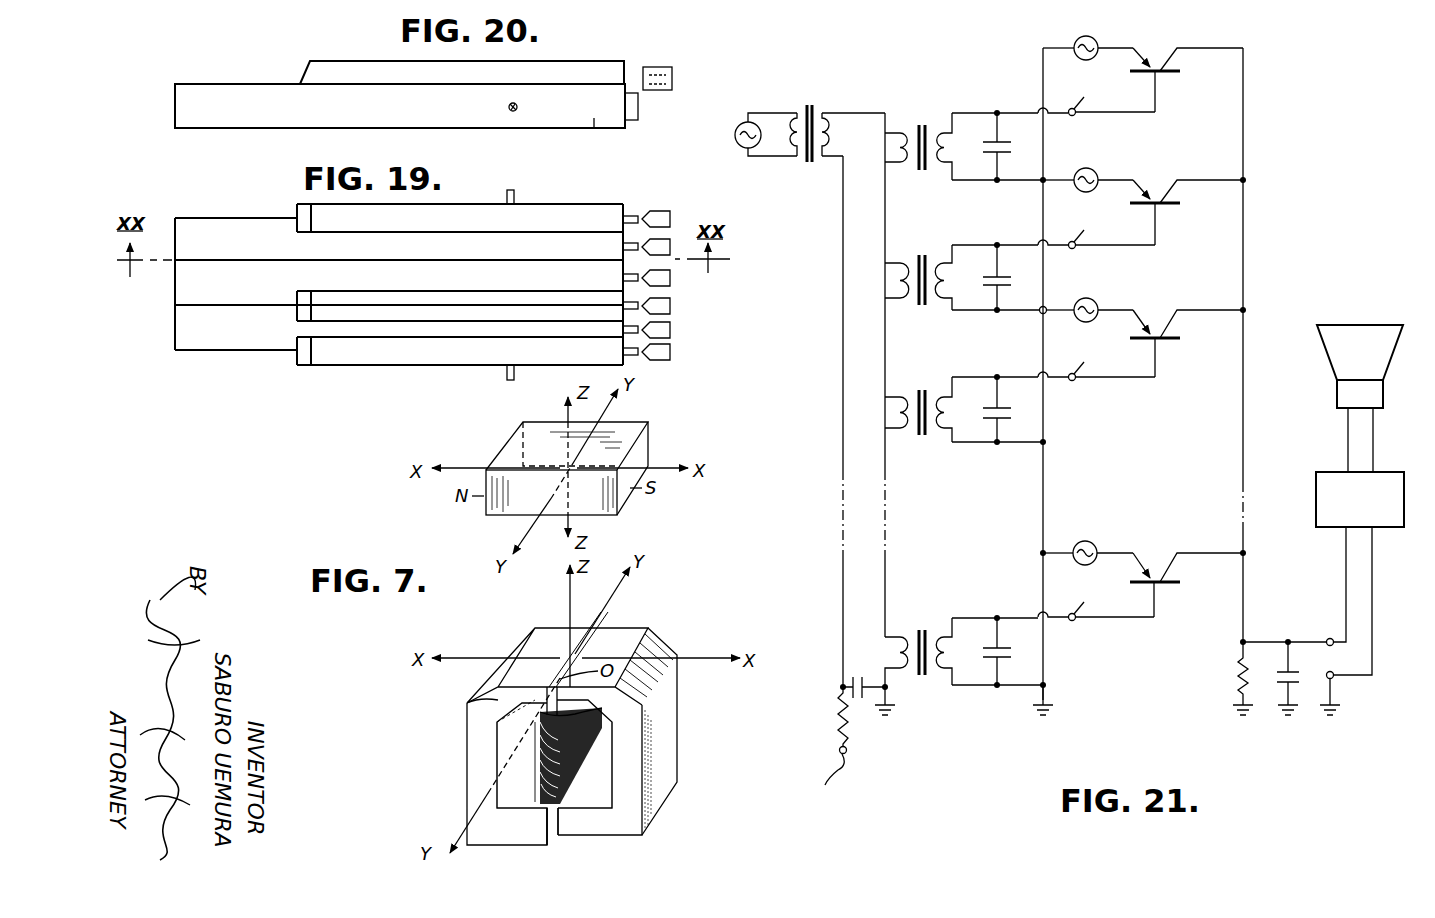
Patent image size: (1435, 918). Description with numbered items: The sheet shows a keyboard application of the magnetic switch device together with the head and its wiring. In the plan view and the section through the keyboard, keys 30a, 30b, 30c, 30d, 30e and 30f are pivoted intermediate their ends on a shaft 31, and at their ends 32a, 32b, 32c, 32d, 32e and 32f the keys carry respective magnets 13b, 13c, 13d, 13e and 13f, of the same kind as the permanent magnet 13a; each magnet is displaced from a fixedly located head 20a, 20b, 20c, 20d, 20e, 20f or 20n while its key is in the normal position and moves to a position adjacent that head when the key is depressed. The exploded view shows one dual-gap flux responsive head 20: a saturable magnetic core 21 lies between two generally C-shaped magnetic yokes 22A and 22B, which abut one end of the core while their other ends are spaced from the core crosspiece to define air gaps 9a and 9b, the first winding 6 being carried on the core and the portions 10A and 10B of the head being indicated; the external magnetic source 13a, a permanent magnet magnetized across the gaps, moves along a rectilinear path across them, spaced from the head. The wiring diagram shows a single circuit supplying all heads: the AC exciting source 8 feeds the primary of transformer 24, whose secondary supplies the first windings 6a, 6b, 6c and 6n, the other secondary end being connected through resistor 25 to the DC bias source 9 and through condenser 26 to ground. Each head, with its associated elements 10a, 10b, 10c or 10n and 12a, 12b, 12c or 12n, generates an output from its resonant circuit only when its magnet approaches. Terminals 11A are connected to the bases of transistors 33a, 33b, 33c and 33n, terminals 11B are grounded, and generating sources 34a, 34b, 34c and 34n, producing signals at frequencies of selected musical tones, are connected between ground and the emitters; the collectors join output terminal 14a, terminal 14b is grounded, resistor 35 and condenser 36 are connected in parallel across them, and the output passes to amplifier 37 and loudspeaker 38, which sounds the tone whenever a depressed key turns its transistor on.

In FIG. 20, the key 30a is at (336, 63).
In FIG. 19, the key 30a is at (320, 233).
In FIG. 20, the key 30b is at (258, 115).
In FIG. 19, the key 30b is at (256, 221).
In FIG. 19, the key 30c is at (190, 298).
In FIG. 19, the key 30d is at (296, 313).
In FIG. 19, the key 30e is at (186, 340).
In FIG. 19, the key 30f is at (296, 360).
In FIG. 20, the shaft 31 is at (517, 107).
In FIG. 19, the shaft 31 is at (506, 196).
In FIG. 19, the key end 32a is at (624, 219).
In FIG. 20, the key end 32b is at (597, 120).
In FIG. 19, the key end 32b is at (623, 250).
In FIG. 19, the key end 32c is at (623, 281).
In FIG. 19, the key end 32d is at (623, 310).
In FIG. 19, the key end 32e is at (622, 330).
In FIG. 19, the key end 32f is at (623, 358).
In FIG. 19, the head 20a is at (662, 210).
In FIG. 21, the head 20a is at (922, 128).
In FIG. 20, the head 20b is at (664, 66).
In FIG. 19, the head 20b is at (672, 252).
In FIG. 21, the head 20b is at (920, 257).
In FIG. 19, the head 20c is at (672, 283).
In FIG. 21, the head 20c is at (922, 402).
In FIG. 19, the head 20d is at (672, 310).
In FIG. 19, the head 20e is at (672, 335).
In FIG. 19, the head 20f is at (672, 360).
In FIG. 21, the head 20n is at (922, 632).
In FIG. 19, the external magnetic source 13a is at (636, 212).
In FIG. 7, the external magnetic source 13a is at (512, 437).
In FIG. 20, the magnet 13b is at (638, 108).
In FIG. 19, the magnet 13b is at (668, 246).
In FIG. 19, the magnet 13c is at (670, 262).
In FIG. 19, the magnet 13d is at (670, 300).
In FIG. 19, the magnet 13e is at (668, 358).
In FIG. 19, the magnet 13f is at (648, 360).
In FIG. 7, the dual-gap magnetic flux responsive head 20 is at (485, 742).
In FIG. 7, the saturable magnetic core 21 is at (470, 706).
In FIG. 7, the magnetic yoke 22A is at (470, 782).
In FIG. 7, the magnetic yoke 22B is at (657, 791).
In FIG. 7, the pole piece 10A is at (540, 756).
In FIG. 7, the pole piece 10B is at (648, 676).
In FIG. 7, the air gap 9a is at (553, 687).
In FIG. 7, the air gap 9b is at (598, 645).
In FIG. 7, the first winding 6 is at (593, 765).
In FIG. 21, the AC exciting source 8 is at (740, 122).
In FIG. 21, the transformer 24 is at (803, 122).
In FIG. 21, the first winding 6a is at (897, 158).
In FIG. 21, the first winding 6b is at (897, 283).
In FIG. 21, the first winding 6c is at (897, 414).
In FIG. 21, the first winding 6n is at (897, 648).
In FIG. 21, the pickup winding 10a is at (950, 155).
In FIG. 21, the pickup winding 10b is at (955, 290).
In FIG. 21, the pickup winding 10c is at (955, 418).
In FIG. 21, the pickup winding 10n is at (950, 655).
In FIG. 21, the capacitor 12a is at (978, 152).
In FIG. 21, the capacitor 12b is at (980, 280).
In FIG. 21, the capacitor 12c is at (1010, 417).
In FIG. 21, the capacitor 12n is at (978, 658).
In FIG. 21, the terminal 11A is at (1096, 347).
In FIG. 21, the terminal 11B is at (1042, 182).
In FIG. 21, the generating source 34a is at (1100, 27).
In FIG. 21, the generating source 34b is at (1100, 162).
In FIG. 21, the generating source 34c is at (1100, 296).
In FIG. 21, the generating source 34n is at (1100, 531).
In FIG. 21, the transistor 33a is at (1182, 74).
In FIG. 21, the transistor 33b is at (1182, 206).
In FIG. 21, the transistor 33c is at (1182, 341).
In FIG. 21, the transistor 33n is at (1182, 585).
In FIG. 21, the resistor 25 is at (819, 711).
In FIG. 21, the condenser 26 is at (857, 705).
In FIG. 21, the source of DC bias current 9 is at (833, 768).
In FIG. 21, the output terminal 14a is at (1331, 638).
In FIG. 21, the output terminal 14b is at (1336, 680).
In FIG. 21, the resistor 35 is at (1238, 680).
In FIG. 21, the condenser 36 is at (1275, 682).
In FIG. 21, the amplifier 37 is at (1322, 470).
In FIG. 21, the loudspeaker 38 is at (1338, 368).